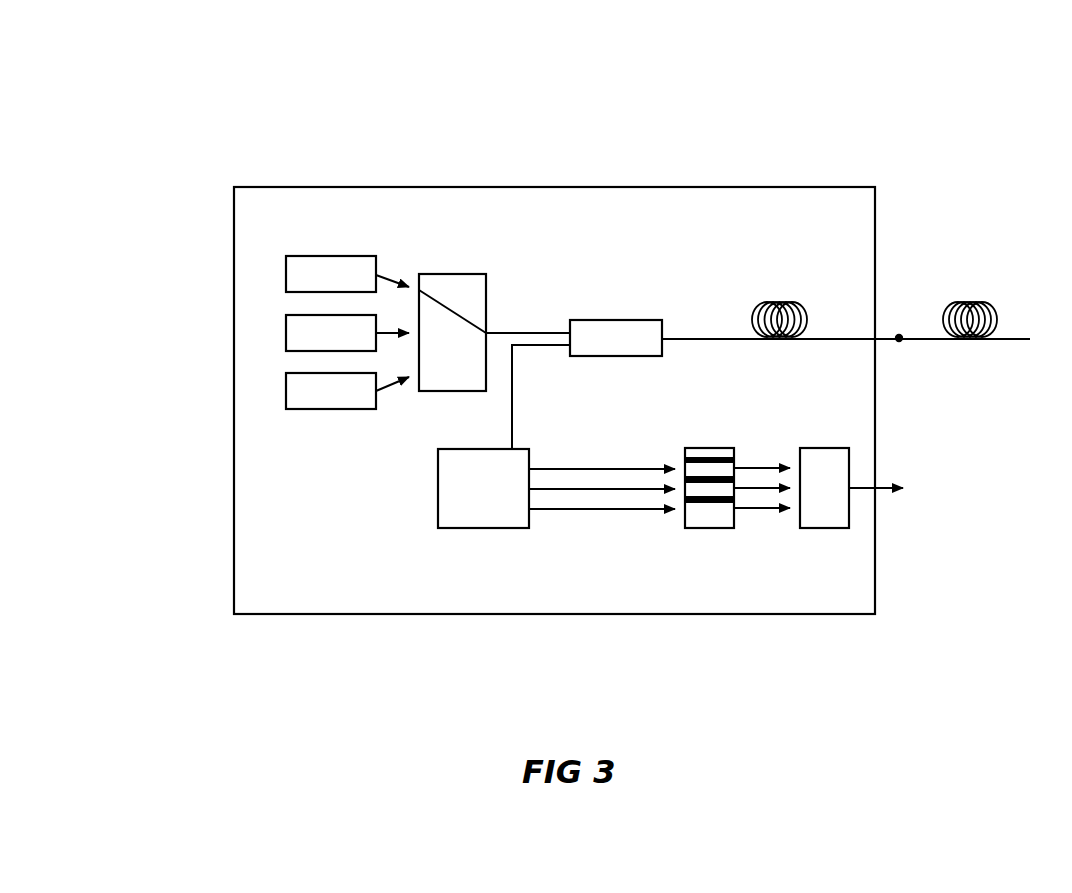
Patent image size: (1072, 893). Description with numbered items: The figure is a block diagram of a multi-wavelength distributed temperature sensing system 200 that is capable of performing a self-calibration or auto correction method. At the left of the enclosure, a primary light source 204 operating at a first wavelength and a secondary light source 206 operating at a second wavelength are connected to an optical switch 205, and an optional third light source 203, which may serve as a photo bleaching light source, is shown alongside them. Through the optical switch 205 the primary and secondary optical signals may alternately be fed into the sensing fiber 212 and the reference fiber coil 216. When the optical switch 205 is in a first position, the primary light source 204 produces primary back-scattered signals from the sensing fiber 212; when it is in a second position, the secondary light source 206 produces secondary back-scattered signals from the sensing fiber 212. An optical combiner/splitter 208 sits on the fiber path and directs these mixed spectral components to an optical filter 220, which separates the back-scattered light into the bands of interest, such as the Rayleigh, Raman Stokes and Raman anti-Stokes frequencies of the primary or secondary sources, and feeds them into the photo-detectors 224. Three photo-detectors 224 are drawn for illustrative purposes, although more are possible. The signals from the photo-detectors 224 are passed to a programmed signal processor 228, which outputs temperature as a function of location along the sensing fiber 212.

The multi-wavelength DTS system 200 is at (196, 94).
The third light source 203 is at (298, 333).
The primary light source 204 is at (327, 272).
The optical switch 205 is at (449, 274).
The secondary light source 206 is at (298, 397).
The optical combiner/splitter 208 is at (601, 330).
The sensing fiber 212 is at (968, 300).
The reference fiber coil 216 is at (795, 302).
The optical filter 220 is at (483, 512).
The photo-detectors 224 is at (712, 520).
The programmed signal processor 228 is at (824, 508).